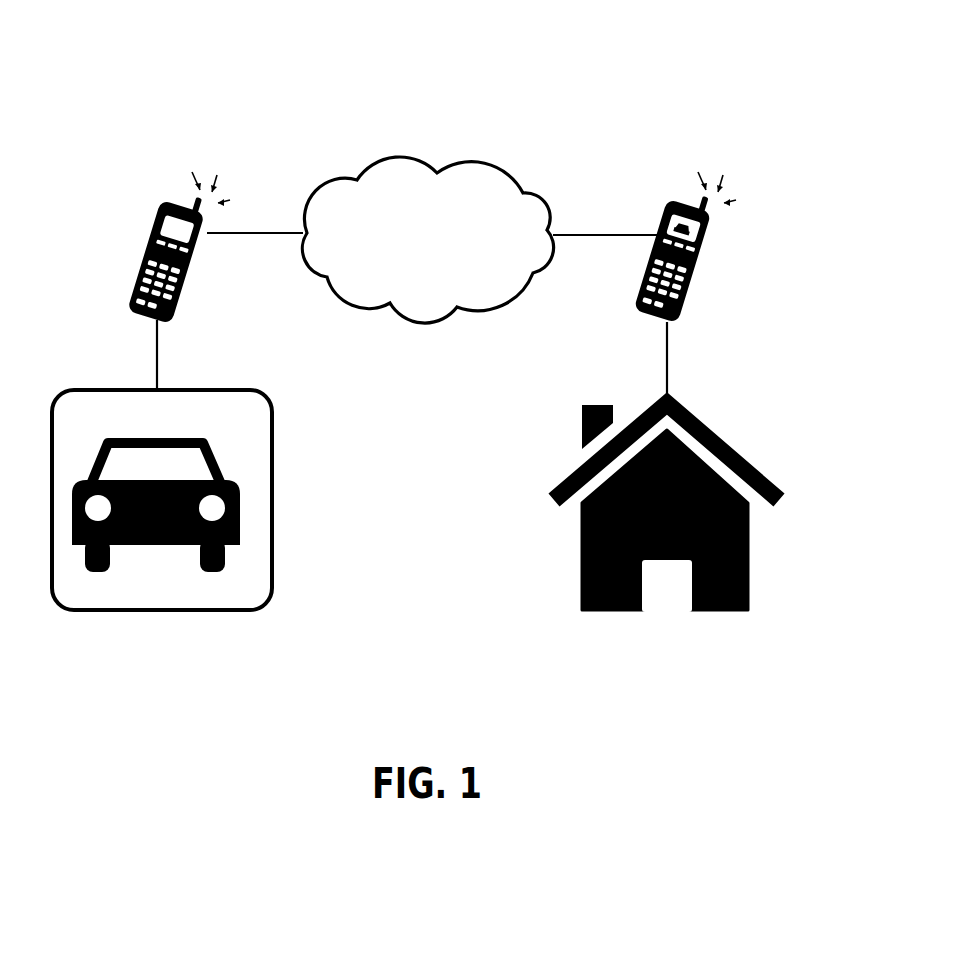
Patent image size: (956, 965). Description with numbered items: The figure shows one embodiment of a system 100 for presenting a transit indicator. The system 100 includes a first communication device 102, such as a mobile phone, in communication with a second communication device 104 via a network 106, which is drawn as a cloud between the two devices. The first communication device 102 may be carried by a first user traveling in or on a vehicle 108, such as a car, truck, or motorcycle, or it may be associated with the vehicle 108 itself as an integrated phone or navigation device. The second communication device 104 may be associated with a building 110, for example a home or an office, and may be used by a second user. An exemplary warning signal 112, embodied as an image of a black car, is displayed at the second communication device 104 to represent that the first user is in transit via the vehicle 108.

The system 100 is at (403, 80).
The first communication device 102 is at (172, 202).
The second communication device 104 is at (673, 208).
The network 106 is at (427, 240).
The vehicle 108 is at (272, 470).
The building 110 is at (780, 500).
The warning signal 112 is at (682, 228).